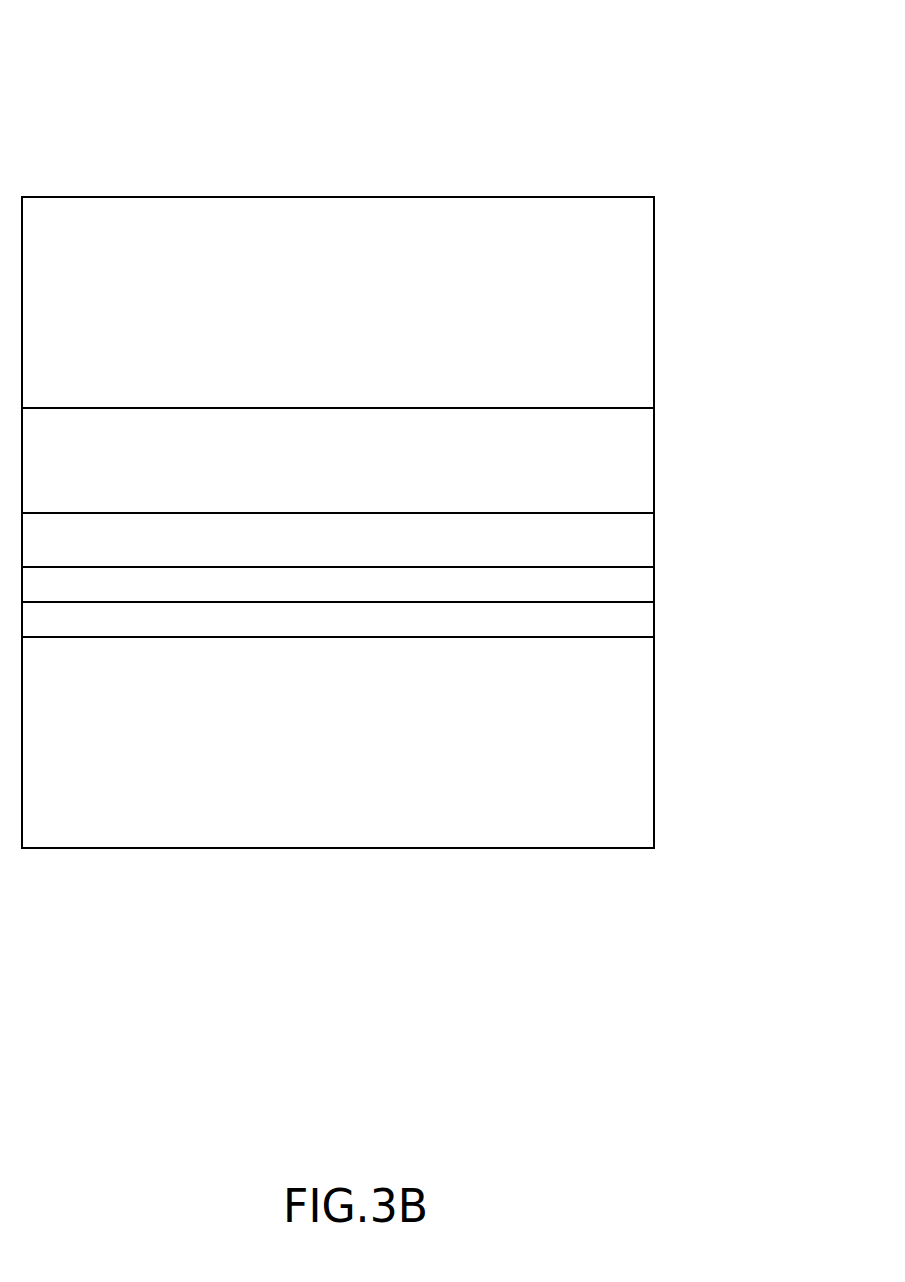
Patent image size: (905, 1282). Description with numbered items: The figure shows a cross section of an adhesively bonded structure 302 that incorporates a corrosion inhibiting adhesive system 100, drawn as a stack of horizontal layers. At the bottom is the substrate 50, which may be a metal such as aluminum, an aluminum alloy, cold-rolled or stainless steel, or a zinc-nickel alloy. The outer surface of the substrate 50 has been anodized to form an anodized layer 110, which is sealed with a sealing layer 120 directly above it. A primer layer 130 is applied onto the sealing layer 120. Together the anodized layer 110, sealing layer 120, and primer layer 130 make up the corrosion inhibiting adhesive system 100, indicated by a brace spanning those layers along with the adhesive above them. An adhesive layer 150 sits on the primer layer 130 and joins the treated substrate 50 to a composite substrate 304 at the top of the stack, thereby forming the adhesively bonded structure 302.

The adhesively bonded structure 302 is at (516, 76).
The composite substrate 304 is at (358, 312).
The adhesive layer 150 is at (358, 470).
The primer layer 130 is at (358, 550).
The sealing layer 120 is at (358, 594).
The anodized layer 110 is at (358, 628).
The corrosion inhibiting adhesive system 100 is at (663, 408).
The substrate 50 is at (353, 753).